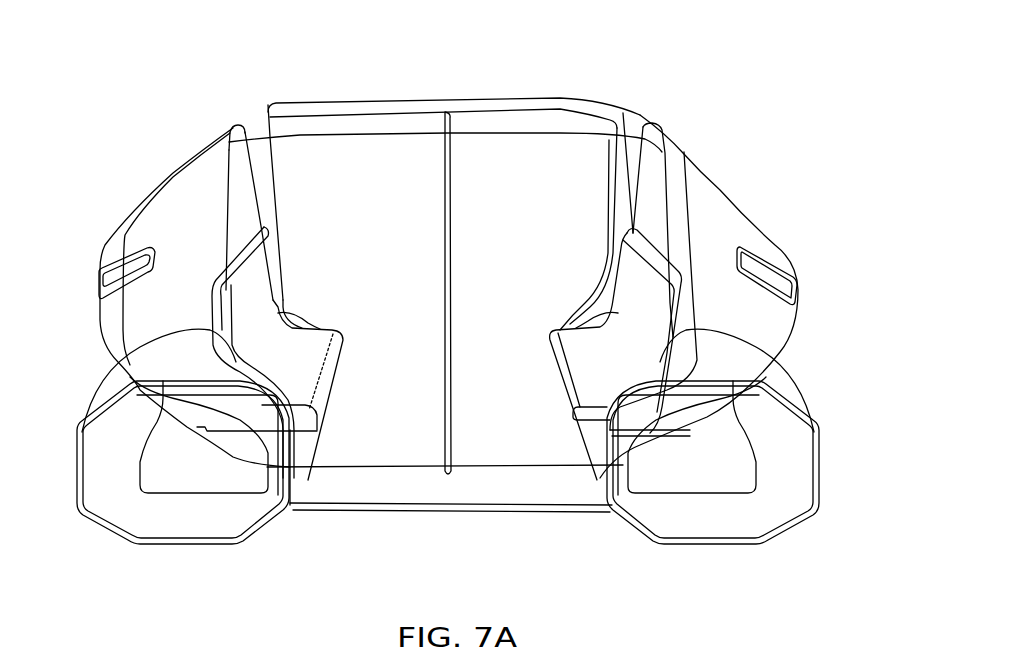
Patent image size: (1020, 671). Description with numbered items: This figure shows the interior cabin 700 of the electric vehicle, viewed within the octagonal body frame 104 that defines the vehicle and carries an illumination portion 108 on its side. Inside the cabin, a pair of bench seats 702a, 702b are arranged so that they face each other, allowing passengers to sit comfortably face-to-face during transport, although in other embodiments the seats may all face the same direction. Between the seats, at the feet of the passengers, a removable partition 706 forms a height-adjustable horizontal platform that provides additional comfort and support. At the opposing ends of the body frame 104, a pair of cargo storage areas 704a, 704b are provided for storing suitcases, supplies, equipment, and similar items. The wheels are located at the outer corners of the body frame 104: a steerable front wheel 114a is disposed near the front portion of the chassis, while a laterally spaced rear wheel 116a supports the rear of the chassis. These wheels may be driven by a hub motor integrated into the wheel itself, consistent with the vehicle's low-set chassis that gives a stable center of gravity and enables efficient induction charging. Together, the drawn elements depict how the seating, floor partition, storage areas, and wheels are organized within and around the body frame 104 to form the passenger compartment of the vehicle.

The interior cabin 700 is at (184, 53).
The body frame 104 is at (390, 103).
The illumination portion 108 is at (773, 273).
The cargo storage area 704a is at (207, 330).
The cargo storage area 704b is at (782, 333).
The bench seat 702a is at (304, 465).
The bench seat 702b is at (573, 400).
The removable partition 706 is at (487, 413).
The rear wheel 116a is at (215, 540).
The front wheel 114a is at (770, 503).